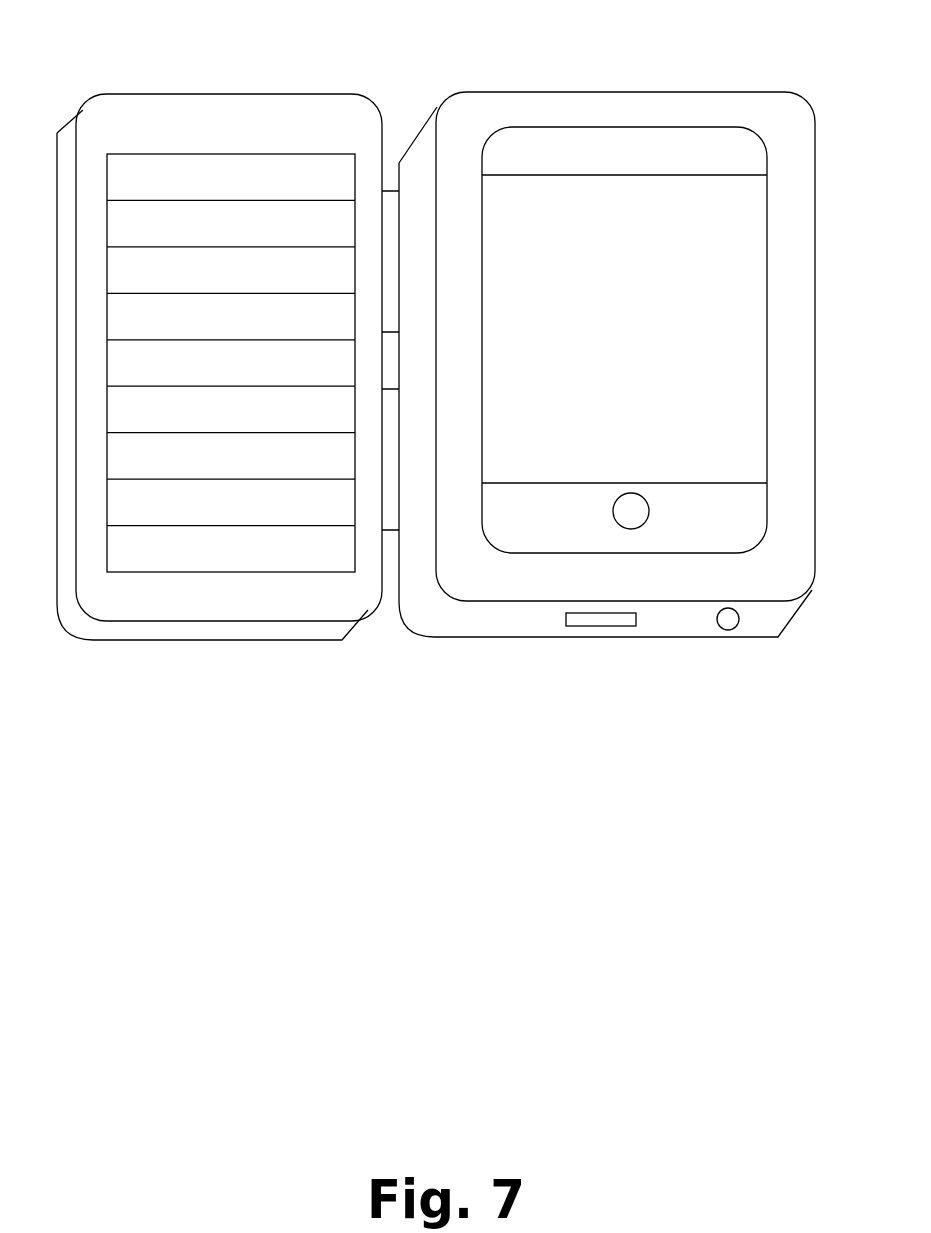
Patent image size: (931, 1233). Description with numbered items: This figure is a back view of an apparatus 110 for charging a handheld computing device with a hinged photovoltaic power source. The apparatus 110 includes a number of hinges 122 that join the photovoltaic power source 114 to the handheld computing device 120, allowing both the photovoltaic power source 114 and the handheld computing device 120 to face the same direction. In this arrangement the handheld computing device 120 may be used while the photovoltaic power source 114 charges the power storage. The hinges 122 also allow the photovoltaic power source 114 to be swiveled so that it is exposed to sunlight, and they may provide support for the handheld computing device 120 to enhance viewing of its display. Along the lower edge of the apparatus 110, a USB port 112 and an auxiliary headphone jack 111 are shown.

The apparatus 110 is at (482, 126).
The auxiliary headphone jack 111 is at (728, 619).
The USB port 112 is at (575, 620).
The photovoltaic power source 114 is at (179, 504).
The handheld computing device 120 is at (637, 267).
The hinges 122 is at (390, 203).